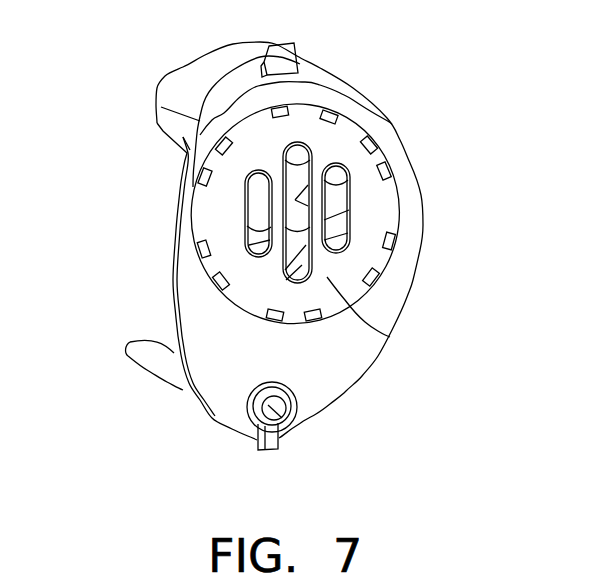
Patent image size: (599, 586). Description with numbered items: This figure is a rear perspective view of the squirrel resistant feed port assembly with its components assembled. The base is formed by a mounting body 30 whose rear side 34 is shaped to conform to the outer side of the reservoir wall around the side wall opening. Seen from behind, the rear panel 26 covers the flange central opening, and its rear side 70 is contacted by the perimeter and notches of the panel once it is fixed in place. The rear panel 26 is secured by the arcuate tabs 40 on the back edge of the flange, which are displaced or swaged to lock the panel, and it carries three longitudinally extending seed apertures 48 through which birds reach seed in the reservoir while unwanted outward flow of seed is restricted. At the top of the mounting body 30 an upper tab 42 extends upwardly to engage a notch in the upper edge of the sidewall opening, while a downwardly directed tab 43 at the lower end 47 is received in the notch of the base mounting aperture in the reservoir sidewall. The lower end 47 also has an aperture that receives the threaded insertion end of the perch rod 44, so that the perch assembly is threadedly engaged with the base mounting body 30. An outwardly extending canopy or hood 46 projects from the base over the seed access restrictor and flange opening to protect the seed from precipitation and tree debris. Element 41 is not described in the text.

The rear panel 26 is at (337, 143).
The mounting body 30 is at (424, 215).
The rear side 34 is at (387, 293).
The arcuate tabs 40 is at (390, 148).
The pivot hole 41 is at (286, 414).
The upper tab 42 is at (298, 56).
The downwardly directed tab 43 is at (283, 443).
The perch rod 44 is at (128, 342).
The hood 46 is at (184, 87).
The lower end 47 is at (248, 407).
The seed apertures 48 is at (248, 197).
The rear side 70 is at (390, 337).